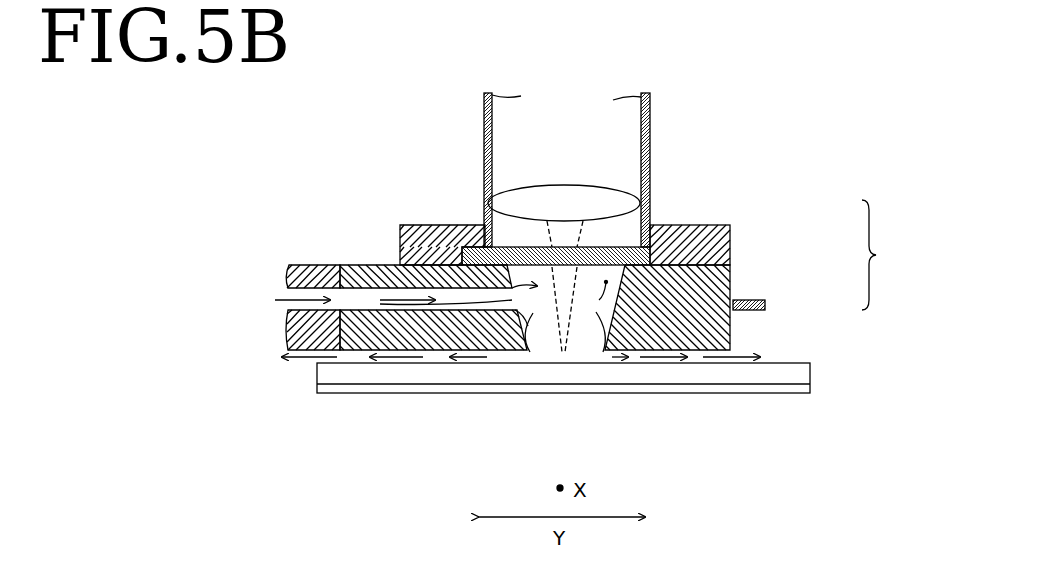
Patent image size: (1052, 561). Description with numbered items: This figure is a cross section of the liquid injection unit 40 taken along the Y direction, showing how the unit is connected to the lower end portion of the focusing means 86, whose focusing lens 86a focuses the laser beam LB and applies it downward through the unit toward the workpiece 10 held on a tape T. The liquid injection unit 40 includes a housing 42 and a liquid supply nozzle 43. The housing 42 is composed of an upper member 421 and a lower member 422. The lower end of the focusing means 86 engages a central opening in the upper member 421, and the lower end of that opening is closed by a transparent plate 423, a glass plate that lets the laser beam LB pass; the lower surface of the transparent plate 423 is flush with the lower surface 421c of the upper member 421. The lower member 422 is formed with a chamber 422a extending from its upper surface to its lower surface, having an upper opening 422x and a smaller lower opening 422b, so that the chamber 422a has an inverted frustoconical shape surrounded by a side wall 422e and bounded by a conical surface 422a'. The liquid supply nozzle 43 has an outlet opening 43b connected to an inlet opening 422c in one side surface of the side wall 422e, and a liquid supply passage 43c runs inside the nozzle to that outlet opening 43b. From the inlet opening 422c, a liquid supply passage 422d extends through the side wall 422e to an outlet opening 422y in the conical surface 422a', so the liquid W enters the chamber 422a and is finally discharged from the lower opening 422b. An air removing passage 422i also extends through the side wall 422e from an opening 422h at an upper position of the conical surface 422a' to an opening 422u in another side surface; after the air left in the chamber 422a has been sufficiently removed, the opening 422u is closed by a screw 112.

The focusing means 86 is at (652, 122).
The focusing lens 86a is at (612, 192).
The liquid injection unit 40 is at (748, 151).
The opening 422h is at (622, 246).
The upper member 421 is at (731, 228).
The air removing passage 422i is at (731, 256).
The housing 42 is at (883, 255).
The lower member 422 is at (731, 283).
The opening 422u is at (735, 295).
The chamber 422a is at (657, 314).
The screw 112 is at (760, 307).
The workpiece 10 is at (801, 376).
The tape T is at (771, 388).
The transparent plate 423 is at (400, 232).
The upper opening 422x is at (453, 223).
The lower surface 421c is at (352, 263).
The liquid supply nozzle 43 is at (288, 265).
The outlet opening 43b is at (312, 285).
The liquid supply passage 43c is at (297, 303).
The liquid W is at (521, 331).
The laser beam LB is at (541, 233).
The outlet opening 422y is at (510, 346).
The inlet opening 422c is at (362, 355).
The liquid supply passage 422d is at (387, 355).
The lower opening 422b is at (543, 355).
The conical surface 422a' is at (608, 392).
The side wall 422e is at (653, 352).